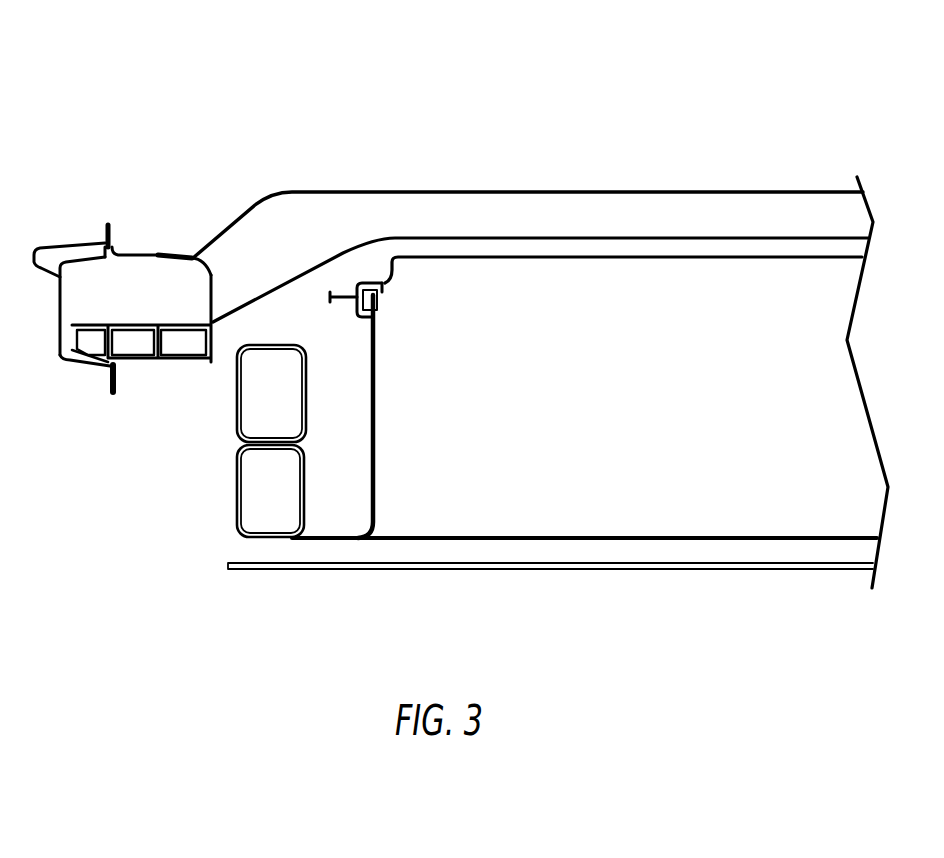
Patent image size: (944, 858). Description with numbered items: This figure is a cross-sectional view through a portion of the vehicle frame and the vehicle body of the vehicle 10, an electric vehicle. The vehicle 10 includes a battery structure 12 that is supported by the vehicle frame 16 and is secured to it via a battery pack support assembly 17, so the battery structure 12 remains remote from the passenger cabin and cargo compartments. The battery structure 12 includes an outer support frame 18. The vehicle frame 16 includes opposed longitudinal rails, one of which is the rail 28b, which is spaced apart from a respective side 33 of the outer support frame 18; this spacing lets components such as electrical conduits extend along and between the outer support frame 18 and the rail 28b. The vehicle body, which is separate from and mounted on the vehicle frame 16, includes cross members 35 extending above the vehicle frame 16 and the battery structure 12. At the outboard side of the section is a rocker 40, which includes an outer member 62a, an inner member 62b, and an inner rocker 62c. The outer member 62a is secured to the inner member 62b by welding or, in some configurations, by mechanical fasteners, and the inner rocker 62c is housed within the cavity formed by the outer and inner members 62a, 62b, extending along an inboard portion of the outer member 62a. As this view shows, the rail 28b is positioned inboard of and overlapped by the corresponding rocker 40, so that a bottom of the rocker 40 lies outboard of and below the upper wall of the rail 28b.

The vehicle 10 is at (695, 79).
The battery structure 12 is at (809, 278).
The vehicle frame 16 is at (194, 484).
The battery pack support assembly 17 is at (425, 572).
The outer support frame 18 is at (354, 191).
The longitudinal rail 28b is at (240, 537).
The side 33 is at (375, 437).
The cross member 35 is at (490, 191).
The rocker 40 is at (73, 233).
The outer member 62a is at (57, 323).
The inner member 62b is at (212, 275).
The inner rocker 62c is at (173, 366).